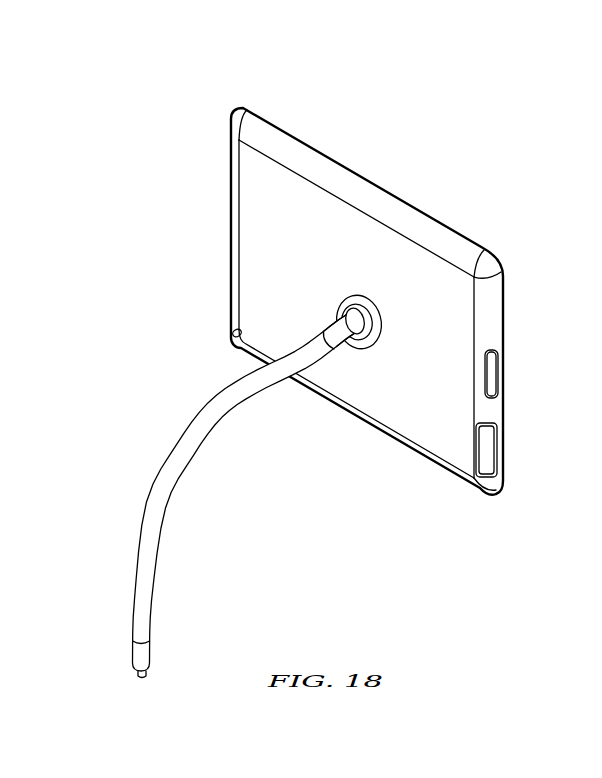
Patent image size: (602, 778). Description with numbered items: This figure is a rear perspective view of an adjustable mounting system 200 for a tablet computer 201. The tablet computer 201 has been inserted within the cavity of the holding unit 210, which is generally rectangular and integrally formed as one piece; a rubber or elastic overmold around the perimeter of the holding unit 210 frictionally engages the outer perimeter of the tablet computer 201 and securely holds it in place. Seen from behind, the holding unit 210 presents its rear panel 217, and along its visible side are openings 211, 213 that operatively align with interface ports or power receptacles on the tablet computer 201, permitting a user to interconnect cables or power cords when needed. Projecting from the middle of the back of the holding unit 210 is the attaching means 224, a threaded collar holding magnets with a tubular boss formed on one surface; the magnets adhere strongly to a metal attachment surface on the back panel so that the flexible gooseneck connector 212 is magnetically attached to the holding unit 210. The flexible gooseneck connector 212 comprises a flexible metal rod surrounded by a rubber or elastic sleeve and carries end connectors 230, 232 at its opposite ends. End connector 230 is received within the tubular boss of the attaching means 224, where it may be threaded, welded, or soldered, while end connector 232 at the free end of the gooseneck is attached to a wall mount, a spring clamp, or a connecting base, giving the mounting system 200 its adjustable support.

The mounting system 200 is at (316, 90).
The tablet computer 201 is at (446, 184).
The holding unit 210 is at (487, 312).
The opening 211 is at (497, 369).
The flexible gooseneck connector 212 is at (165, 504).
The opening 213 is at (487, 455).
The rear panel 217 is at (258, 230).
The attaching means 224 is at (381, 323).
The end connector 230 is at (337, 330).
The end connector 232 is at (137, 652).